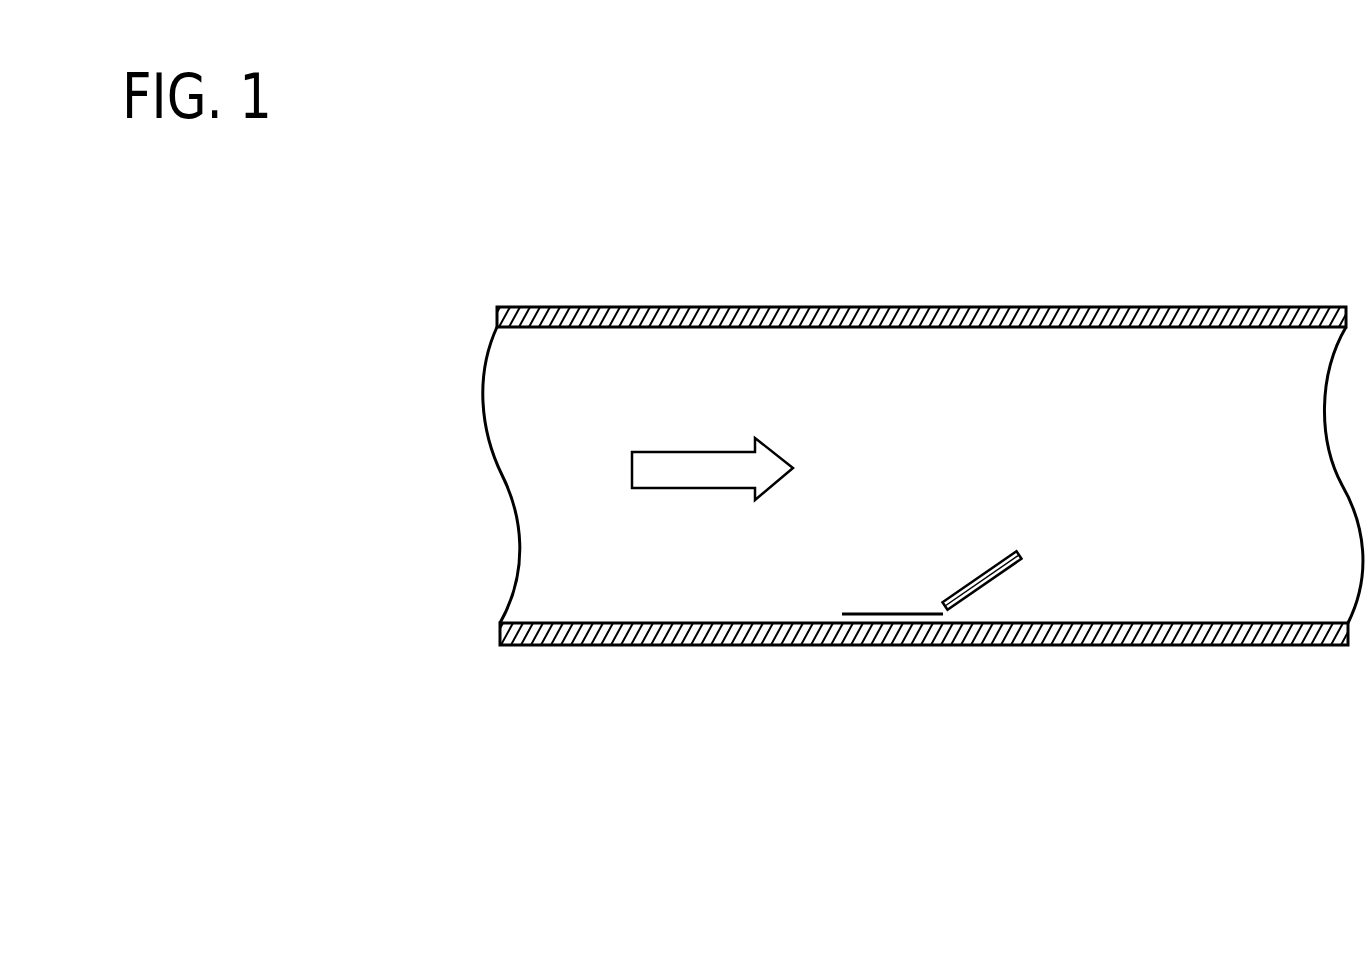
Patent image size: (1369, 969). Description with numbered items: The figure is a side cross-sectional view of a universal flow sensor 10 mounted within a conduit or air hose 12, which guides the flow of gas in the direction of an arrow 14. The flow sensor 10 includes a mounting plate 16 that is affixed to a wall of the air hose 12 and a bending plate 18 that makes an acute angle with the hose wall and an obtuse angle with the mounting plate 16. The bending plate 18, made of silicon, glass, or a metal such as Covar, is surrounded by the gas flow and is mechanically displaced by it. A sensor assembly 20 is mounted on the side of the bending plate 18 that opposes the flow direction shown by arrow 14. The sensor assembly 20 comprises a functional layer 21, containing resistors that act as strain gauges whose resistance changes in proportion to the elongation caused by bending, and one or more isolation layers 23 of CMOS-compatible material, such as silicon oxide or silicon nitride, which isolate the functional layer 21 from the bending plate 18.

The universal flow sensor 10 is at (969, 573).
The air hose 12 is at (1222, 306).
The arrow 14 is at (775, 452).
The mounting plate 16 is at (870, 614).
The bending plate 18 is at (982, 645).
The sensor assembly 20 is at (1057, 517).
The functional layer 21 is at (985, 623).
The isolation layer 23 is at (1022, 553).